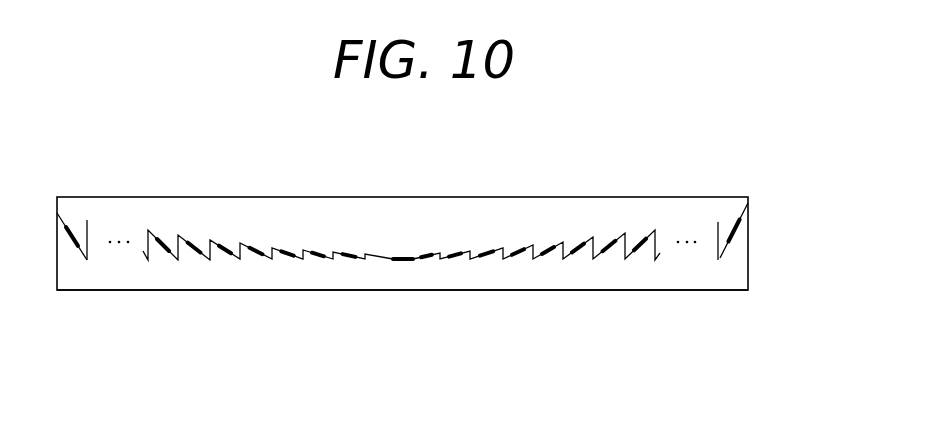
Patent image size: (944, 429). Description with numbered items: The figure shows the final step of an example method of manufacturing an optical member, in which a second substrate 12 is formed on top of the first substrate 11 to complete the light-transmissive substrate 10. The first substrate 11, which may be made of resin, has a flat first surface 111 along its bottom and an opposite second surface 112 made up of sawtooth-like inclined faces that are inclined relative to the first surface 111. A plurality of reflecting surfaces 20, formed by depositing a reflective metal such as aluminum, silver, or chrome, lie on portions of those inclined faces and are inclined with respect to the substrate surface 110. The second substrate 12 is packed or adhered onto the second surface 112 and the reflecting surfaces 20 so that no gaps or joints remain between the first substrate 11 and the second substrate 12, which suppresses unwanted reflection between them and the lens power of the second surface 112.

The substrate 10 is at (462, 247).
The first substrate 11 is at (440, 266).
The second substrate 12 is at (735, 210).
The reflecting surfaces 20 is at (403, 257).
The substrate surface 110 is at (584, 197).
The first surface 111 is at (356, 290).
The second surface 112 is at (488, 250).